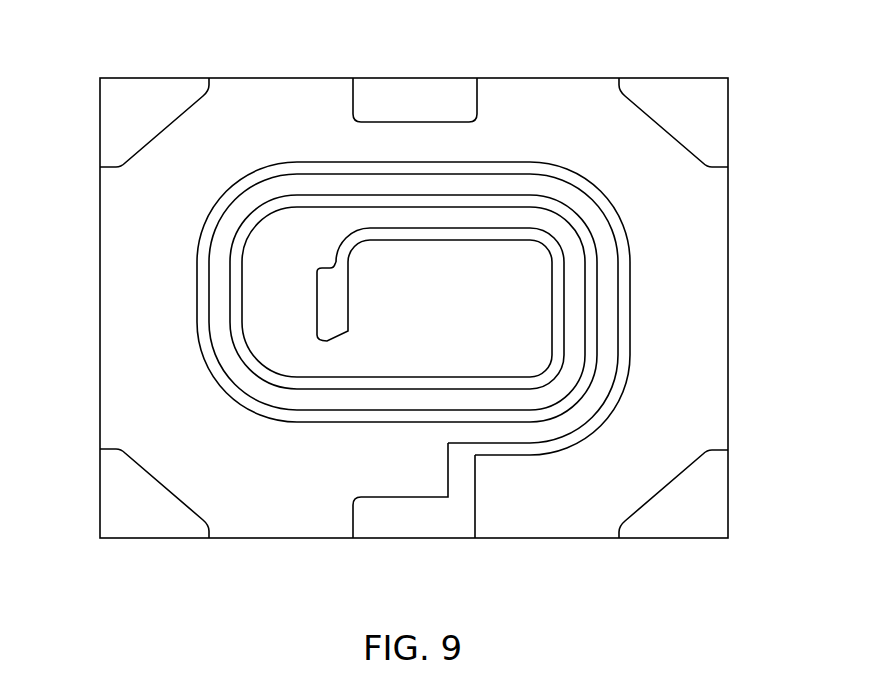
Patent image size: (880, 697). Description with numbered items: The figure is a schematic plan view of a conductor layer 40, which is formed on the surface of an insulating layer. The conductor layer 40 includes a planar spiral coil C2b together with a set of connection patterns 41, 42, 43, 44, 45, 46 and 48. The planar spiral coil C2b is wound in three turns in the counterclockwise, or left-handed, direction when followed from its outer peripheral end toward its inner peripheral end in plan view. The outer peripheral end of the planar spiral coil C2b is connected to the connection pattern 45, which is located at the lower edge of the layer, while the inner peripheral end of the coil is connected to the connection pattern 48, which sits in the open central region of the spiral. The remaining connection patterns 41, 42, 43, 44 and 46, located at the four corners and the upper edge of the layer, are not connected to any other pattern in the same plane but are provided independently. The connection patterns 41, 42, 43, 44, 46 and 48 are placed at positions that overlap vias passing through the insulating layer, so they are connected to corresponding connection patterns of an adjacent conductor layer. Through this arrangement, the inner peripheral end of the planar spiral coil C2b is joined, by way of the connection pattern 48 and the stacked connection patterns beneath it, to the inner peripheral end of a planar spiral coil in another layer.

The conductor layer 40 is at (703, 35).
The connection pattern 41 is at (708, 115).
The connection pattern 42 is at (410, 96).
The connection pattern 43 is at (120, 110).
The connection pattern 44 is at (708, 507).
The connection pattern 45 is at (408, 525).
The connection pattern 46 is at (120, 502).
The connection pattern 48 is at (338, 310).
The planar spiral coil C2b is at (627, 312).